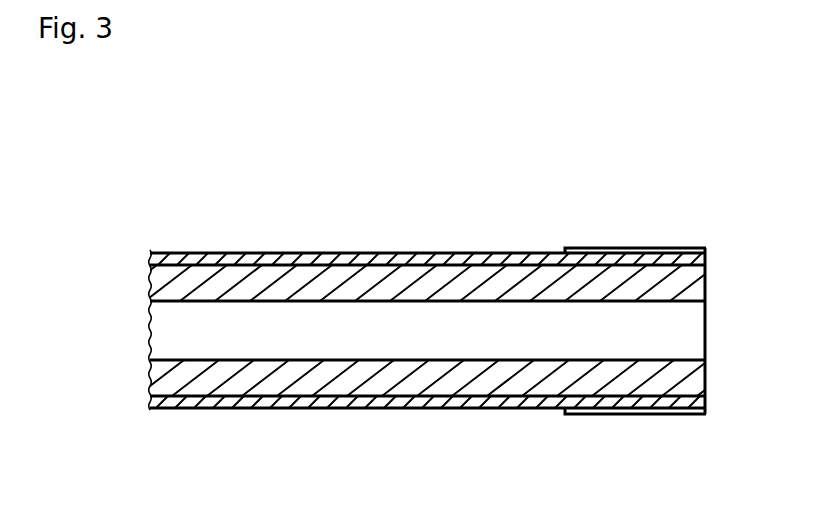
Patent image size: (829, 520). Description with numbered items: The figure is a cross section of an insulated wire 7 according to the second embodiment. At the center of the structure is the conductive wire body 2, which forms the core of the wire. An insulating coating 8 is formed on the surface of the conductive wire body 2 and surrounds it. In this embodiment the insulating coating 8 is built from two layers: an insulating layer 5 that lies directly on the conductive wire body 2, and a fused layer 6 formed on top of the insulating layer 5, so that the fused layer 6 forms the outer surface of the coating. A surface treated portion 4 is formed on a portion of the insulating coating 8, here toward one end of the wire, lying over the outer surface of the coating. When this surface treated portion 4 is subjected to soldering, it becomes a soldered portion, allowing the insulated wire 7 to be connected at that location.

The conductive wire body 2 is at (487, 300).
The surface treated portion 4 is at (647, 247).
The insulating layer 5 is at (272, 263).
The fused layer 6 is at (306, 253).
The insulated wire 7 is at (398, 252).
The insulating coating 8 is at (273, 183).